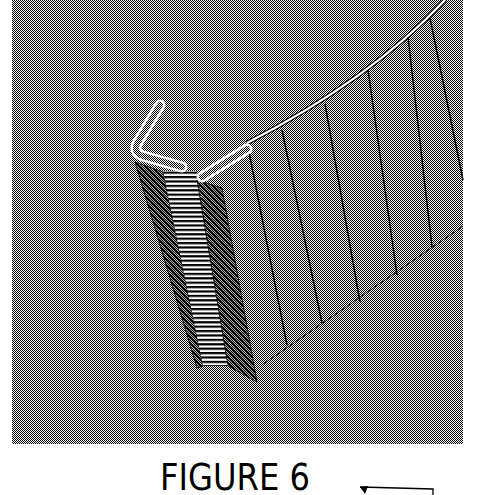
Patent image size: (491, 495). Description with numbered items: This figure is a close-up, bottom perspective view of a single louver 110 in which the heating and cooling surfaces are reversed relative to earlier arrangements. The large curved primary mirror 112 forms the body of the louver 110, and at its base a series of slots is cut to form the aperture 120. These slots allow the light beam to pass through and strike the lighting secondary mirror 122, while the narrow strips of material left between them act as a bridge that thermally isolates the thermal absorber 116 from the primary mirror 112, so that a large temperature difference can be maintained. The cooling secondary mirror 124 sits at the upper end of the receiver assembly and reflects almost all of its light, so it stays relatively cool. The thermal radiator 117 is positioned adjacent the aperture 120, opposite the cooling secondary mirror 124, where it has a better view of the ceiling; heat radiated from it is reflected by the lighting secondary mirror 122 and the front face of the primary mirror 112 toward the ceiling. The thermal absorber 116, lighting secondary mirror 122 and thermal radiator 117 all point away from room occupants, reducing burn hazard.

The louver 110 is at (318, 80).
The primary mirror 112 is at (368, 270).
The thermal absorber 116 is at (173, 335).
The thermal radiator 117 is at (143, 162).
The aperture 120 is at (200, 374).
The lighting secondary mirror 122 is at (155, 138).
The cooling secondary mirror 124 is at (267, 355).